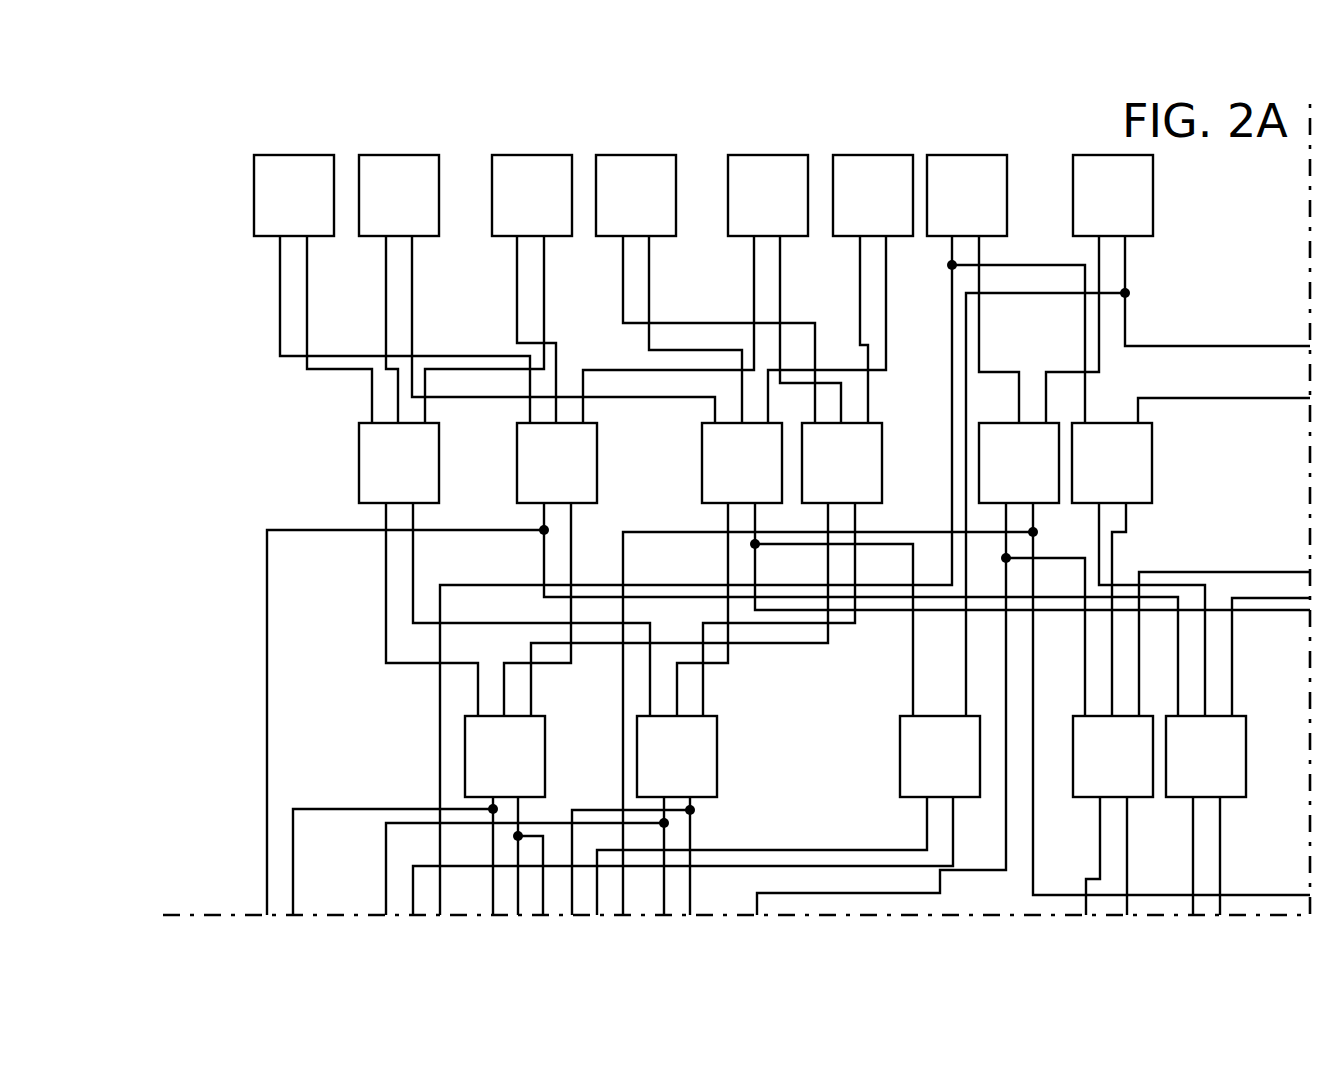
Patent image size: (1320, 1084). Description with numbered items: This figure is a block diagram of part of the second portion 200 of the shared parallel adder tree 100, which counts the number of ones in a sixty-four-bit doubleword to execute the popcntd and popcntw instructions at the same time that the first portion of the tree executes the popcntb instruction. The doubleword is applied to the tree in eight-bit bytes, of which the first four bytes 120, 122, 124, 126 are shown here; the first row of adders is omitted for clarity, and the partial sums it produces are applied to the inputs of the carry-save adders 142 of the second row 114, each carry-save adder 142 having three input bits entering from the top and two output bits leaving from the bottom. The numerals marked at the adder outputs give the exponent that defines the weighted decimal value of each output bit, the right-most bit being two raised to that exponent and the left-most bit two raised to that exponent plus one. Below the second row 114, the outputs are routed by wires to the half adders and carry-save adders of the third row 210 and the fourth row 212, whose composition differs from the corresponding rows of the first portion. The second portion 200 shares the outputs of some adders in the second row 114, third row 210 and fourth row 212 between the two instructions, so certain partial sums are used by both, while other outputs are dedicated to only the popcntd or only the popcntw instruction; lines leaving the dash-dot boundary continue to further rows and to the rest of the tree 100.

The shared parallel adder tree 100 is at (1282, 307).
The second portion 200 is at (788, 536).
The Row 2 114 is at (192, 182).
The Byte 0 120 is at (302, 113).
The Byte 1 122 is at (535, 113).
The Byte 2 124 is at (773, 115).
The Byte 3 126 is at (993, 117).
The CSA 142 is at (263, 199).
The Row 3 210 is at (188, 442).
The Row 4 212 is at (188, 733).